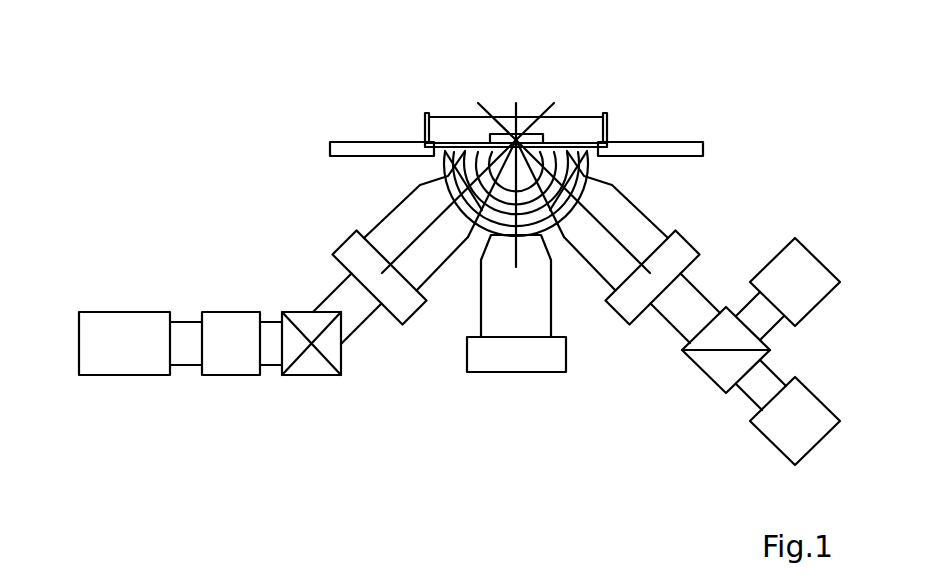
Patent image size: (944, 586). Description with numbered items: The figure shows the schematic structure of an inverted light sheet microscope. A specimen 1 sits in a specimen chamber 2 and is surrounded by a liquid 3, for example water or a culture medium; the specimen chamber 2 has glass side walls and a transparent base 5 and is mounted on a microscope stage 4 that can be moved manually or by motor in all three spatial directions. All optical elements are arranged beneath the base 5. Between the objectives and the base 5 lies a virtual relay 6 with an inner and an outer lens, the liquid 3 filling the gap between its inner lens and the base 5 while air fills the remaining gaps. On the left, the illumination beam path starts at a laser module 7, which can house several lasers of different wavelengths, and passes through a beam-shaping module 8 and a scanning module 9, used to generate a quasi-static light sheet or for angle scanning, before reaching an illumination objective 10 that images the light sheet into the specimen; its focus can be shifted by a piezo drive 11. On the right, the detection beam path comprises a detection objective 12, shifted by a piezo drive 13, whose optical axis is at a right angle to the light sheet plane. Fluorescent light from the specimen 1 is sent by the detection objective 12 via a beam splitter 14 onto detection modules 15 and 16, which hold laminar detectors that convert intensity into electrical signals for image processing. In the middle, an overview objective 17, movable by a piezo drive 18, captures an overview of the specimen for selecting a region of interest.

The specimen 1 is at (543, 134).
The specimen chamber 2 is at (424, 122).
The liquid 3 is at (560, 152).
The microscope stage 4 is at (355, 142).
The base 5 is at (447, 145).
The virtual relay 6 is at (588, 162).
The laser module 7 is at (107, 377).
The beam-shaping module 8 is at (222, 377).
The scanning module 9 is at (308, 377).
The illumination objective 10 is at (403, 202).
The piezo drive 11 is at (332, 262).
The detection objective 12 is at (652, 222).
The piezo drive 13 is at (629, 317).
The beam splitter 14 is at (710, 377).
The detection module 15 is at (803, 243).
The detection module 16 is at (777, 443).
The overview objective 17 is at (538, 373).
The piezo drive 18 is at (466, 357).